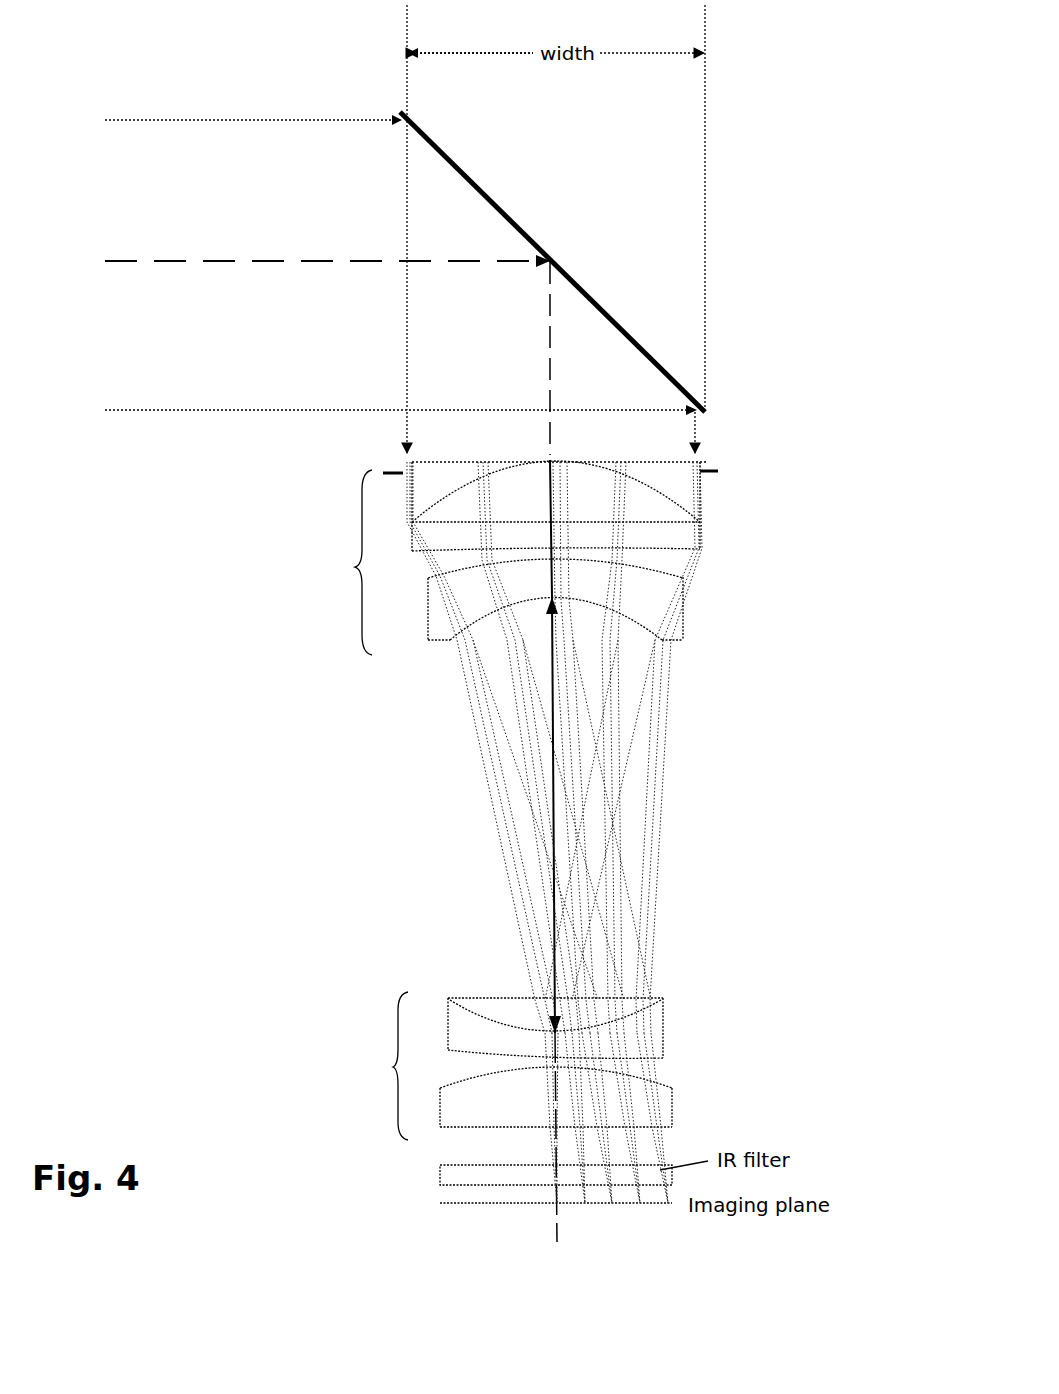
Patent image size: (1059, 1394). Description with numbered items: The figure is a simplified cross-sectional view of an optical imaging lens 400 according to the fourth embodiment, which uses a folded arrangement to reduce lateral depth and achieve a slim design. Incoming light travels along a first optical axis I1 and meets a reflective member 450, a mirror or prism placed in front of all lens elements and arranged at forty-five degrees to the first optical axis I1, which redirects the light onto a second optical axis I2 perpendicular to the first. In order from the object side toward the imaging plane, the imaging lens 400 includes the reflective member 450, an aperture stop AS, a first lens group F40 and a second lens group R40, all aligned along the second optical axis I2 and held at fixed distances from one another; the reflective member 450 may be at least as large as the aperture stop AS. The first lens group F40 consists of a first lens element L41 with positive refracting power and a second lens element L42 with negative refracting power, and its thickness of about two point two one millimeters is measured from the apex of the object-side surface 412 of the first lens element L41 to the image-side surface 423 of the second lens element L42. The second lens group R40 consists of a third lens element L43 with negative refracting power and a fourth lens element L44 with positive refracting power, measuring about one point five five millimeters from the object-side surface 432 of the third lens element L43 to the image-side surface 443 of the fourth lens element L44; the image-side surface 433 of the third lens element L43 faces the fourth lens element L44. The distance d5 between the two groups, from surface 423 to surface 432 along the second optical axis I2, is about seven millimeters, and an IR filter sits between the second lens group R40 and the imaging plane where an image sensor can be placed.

The optical imaging lens 400 is at (778, 93).
The reflective member 450 is at (537, 244).
The object-side surface of first lens element 412 is at (667, 493).
The image side surface of second lens element 423 is at (633, 618).
The object side surface of third lens element 432 is at (488, 1012).
The image-side surface of third lens L43 433 is at (632, 1053).
The image-side surface of fourth lens element 443 is at (483, 1128).
The first lens element L41 is at (588, 507).
The second lens element L42 is at (596, 631).
The third lens element L43 is at (583, 1023).
The fourth lens element L44 is at (552, 1122).
The aperture stop AS is at (718, 471).
The first lens group F40 is at (342, 562).
The second lens group R40 is at (379, 1066).
The distance between first lens group and second lens group d5 is at (553, 820).
The first optical axis I1 is at (301, 260).
The second optical axis I2 is at (563, 769).